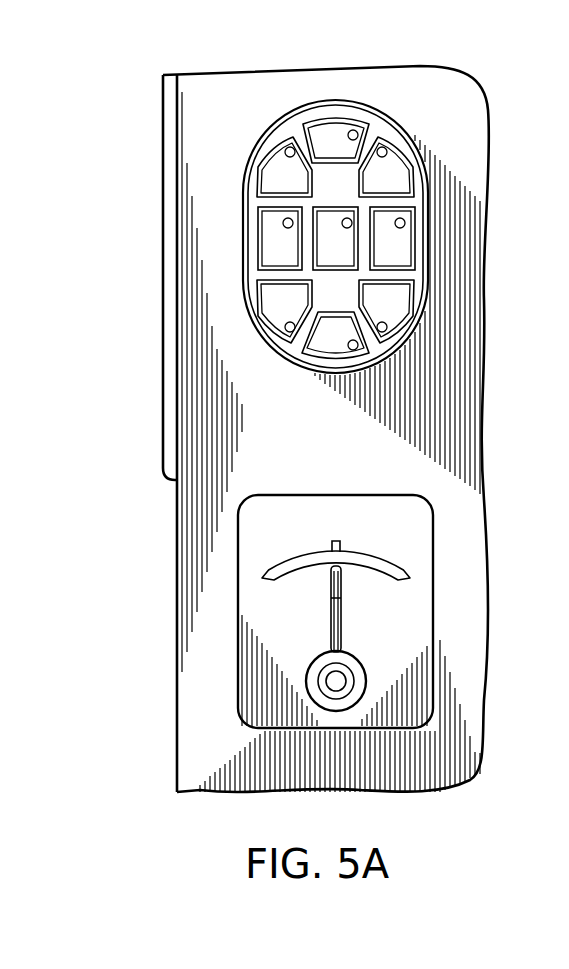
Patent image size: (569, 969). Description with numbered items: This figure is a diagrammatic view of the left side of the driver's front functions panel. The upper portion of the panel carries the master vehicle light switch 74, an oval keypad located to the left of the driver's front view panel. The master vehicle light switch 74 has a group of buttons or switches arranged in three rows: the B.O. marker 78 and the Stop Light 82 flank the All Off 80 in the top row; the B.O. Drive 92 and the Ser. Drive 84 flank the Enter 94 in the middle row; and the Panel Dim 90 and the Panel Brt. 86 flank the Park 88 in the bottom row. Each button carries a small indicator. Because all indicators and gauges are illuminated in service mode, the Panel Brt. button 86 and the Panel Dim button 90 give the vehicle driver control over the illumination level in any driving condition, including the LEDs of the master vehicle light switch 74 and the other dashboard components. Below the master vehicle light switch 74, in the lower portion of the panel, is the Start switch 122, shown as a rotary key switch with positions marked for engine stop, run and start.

The master vehicle light switch 74 is at (266, 96).
The B.O. marker button 78 is at (285, 153).
The All Off button 80 is at (322, 133).
The Stop Light button 82 is at (390, 160).
The Ser. Drive button 84 is at (412, 236).
The Panel Brt. button 86 is at (403, 308).
The Park button 88 is at (339, 344).
The Panel Dim button 90 is at (290, 318).
The B.O. Drive button 92 is at (272, 227).
The Enter button 94 is at (331, 222).
The Start switch 122 is at (232, 644).